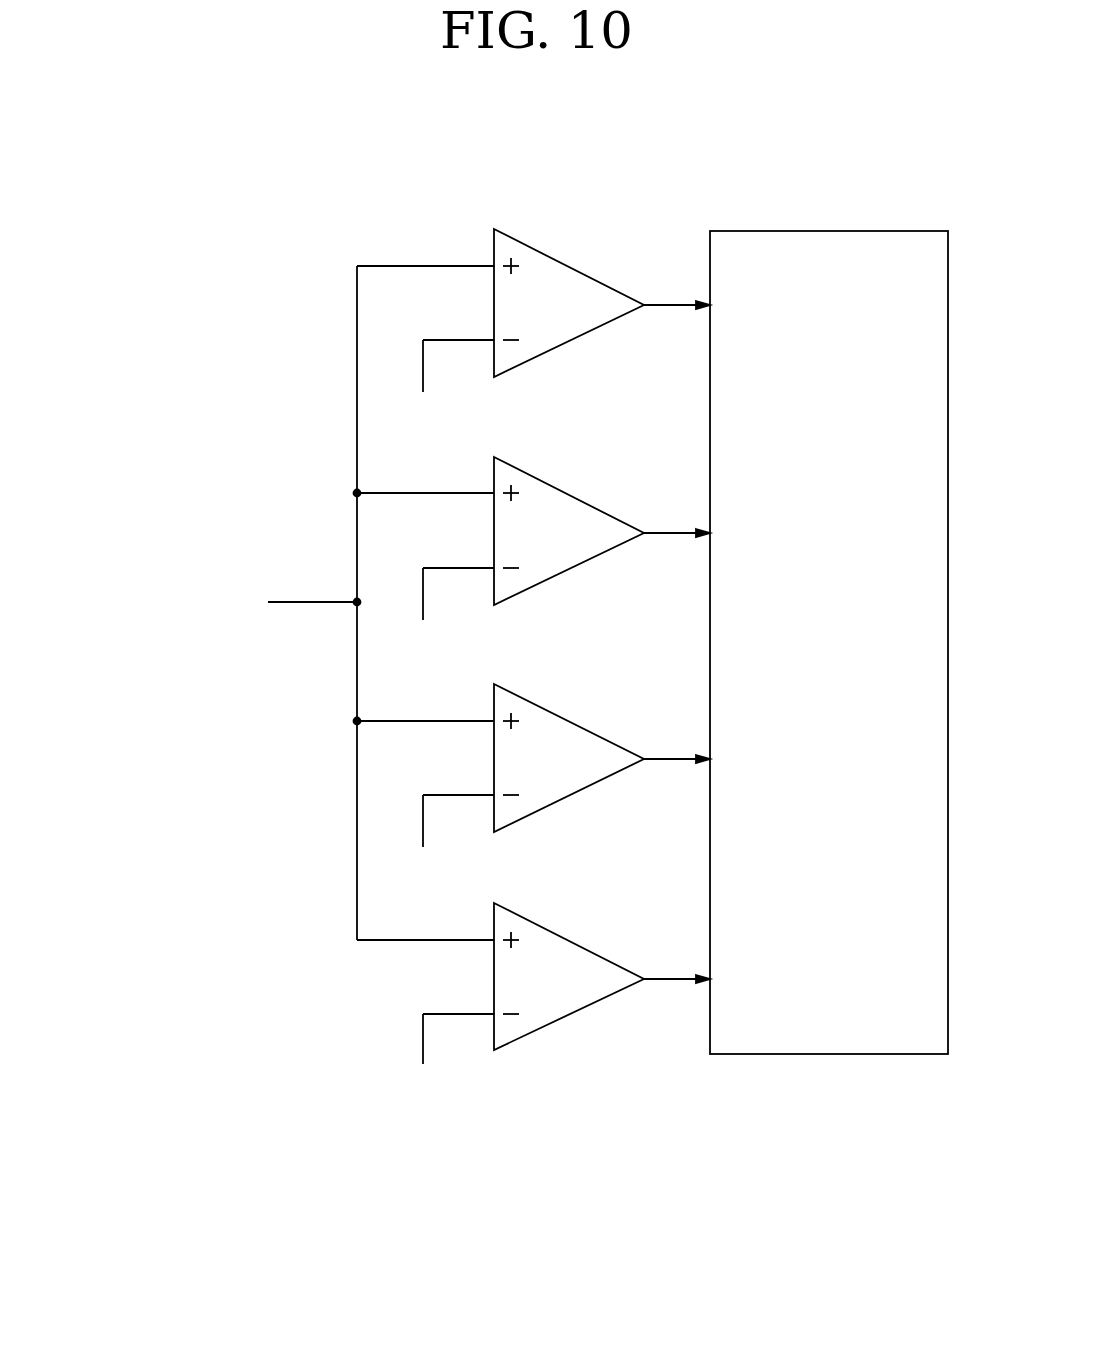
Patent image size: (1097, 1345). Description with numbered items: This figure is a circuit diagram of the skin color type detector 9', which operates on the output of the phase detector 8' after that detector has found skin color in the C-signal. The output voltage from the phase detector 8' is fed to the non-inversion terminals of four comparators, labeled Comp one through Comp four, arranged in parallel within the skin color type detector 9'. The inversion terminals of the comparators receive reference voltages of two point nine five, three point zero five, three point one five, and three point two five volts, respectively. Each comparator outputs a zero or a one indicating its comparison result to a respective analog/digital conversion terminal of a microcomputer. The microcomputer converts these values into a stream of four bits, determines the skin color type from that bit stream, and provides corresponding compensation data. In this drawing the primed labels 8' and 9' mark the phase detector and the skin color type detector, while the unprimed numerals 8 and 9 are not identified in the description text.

The phase detector 8' is at (216, 632).
The skin color type detector 9' is at (651, 691).
The phase detector 8 is at (216, 632).
The comparator and microcomputer circuit 9 is at (651, 691).